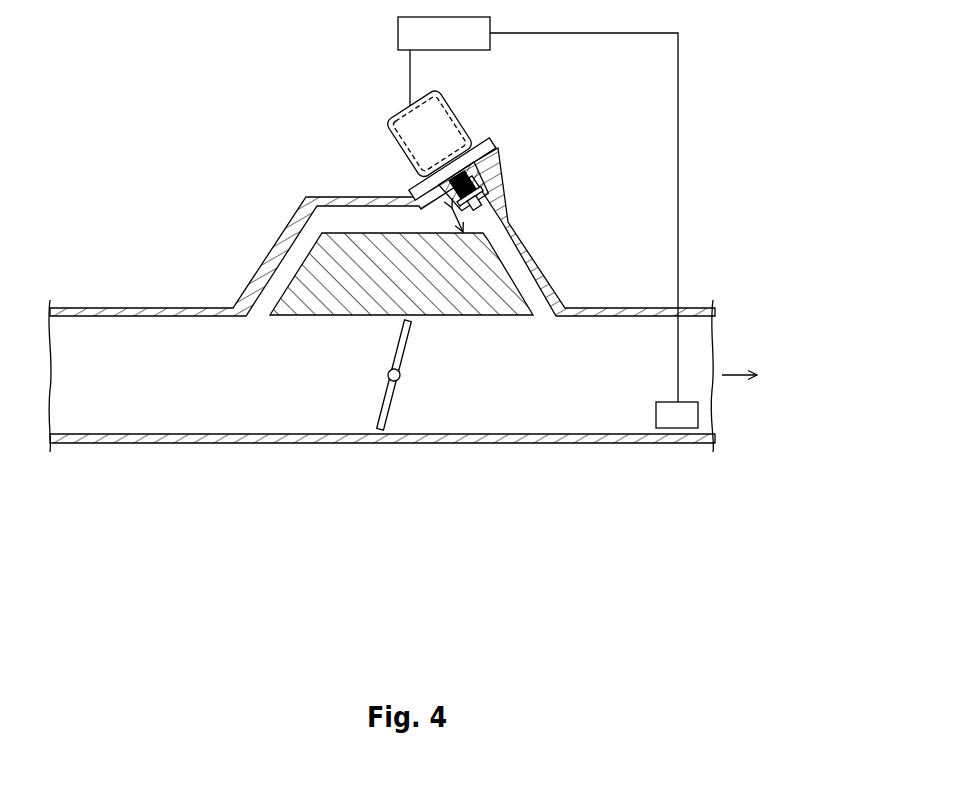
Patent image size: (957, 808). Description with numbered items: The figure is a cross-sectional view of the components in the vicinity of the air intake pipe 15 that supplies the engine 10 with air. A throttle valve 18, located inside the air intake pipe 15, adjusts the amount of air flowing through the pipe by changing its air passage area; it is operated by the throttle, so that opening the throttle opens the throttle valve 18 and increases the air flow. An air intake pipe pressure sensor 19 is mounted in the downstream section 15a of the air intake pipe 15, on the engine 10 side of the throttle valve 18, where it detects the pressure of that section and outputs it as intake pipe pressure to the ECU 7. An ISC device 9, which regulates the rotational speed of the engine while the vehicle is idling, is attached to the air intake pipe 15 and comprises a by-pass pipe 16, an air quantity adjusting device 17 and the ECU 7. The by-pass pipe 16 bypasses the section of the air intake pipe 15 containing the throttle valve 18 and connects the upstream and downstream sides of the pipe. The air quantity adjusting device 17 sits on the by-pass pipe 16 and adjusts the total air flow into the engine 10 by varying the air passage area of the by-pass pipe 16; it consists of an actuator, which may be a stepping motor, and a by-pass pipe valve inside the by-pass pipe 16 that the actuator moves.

The ECU 7 is at (397, 32).
The ISC device 9 is at (320, 147).
The engine 10 is at (793, 376).
The air intake pipe 15 is at (480, 443).
The downstream section 15a is at (551, 384).
The by-pass pipe 16 is at (260, 262).
The air quantity adjusting device 17 is at (470, 155).
The throttle valve 18 is at (387, 418).
The air intake pipe pressure sensor 19 is at (667, 430).